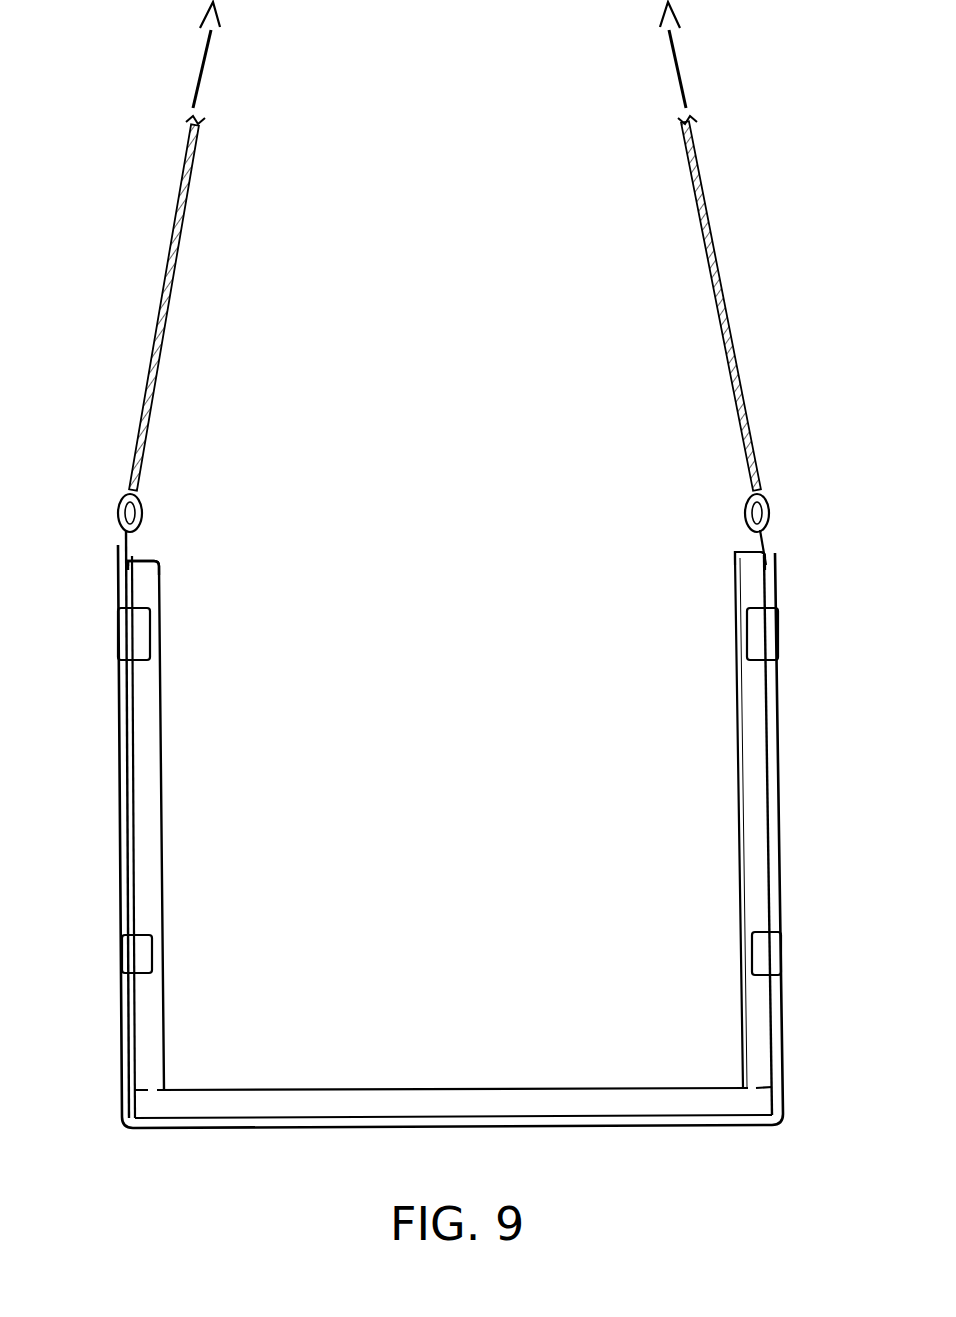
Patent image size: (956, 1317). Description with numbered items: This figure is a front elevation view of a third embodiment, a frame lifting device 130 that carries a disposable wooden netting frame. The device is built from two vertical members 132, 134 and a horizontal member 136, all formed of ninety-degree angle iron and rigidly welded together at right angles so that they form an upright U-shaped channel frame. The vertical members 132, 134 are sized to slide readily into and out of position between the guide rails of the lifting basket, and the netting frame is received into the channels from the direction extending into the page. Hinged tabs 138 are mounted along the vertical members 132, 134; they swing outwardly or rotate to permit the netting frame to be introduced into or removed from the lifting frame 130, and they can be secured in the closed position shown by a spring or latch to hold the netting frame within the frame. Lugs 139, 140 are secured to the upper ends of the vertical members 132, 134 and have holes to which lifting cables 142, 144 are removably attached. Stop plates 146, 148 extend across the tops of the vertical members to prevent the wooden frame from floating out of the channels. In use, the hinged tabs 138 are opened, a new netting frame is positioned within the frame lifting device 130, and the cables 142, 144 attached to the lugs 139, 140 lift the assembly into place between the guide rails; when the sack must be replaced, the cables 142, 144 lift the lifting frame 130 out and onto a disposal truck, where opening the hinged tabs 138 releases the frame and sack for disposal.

The frame lifting device 130 is at (438, 360).
The vertical member 132 is at (172, 830).
The vertical member 134 is at (731, 797).
The horizontal member 136 is at (432, 1082).
The hinged tabs 138 is at (126, 636).
The lug 139 is at (108, 536).
The lug 140 is at (768, 548).
The lifting cable 142 is at (157, 290).
The lifting cable 144 is at (727, 290).
The stop plate 146 is at (150, 548).
The stop plate 148 is at (738, 548).